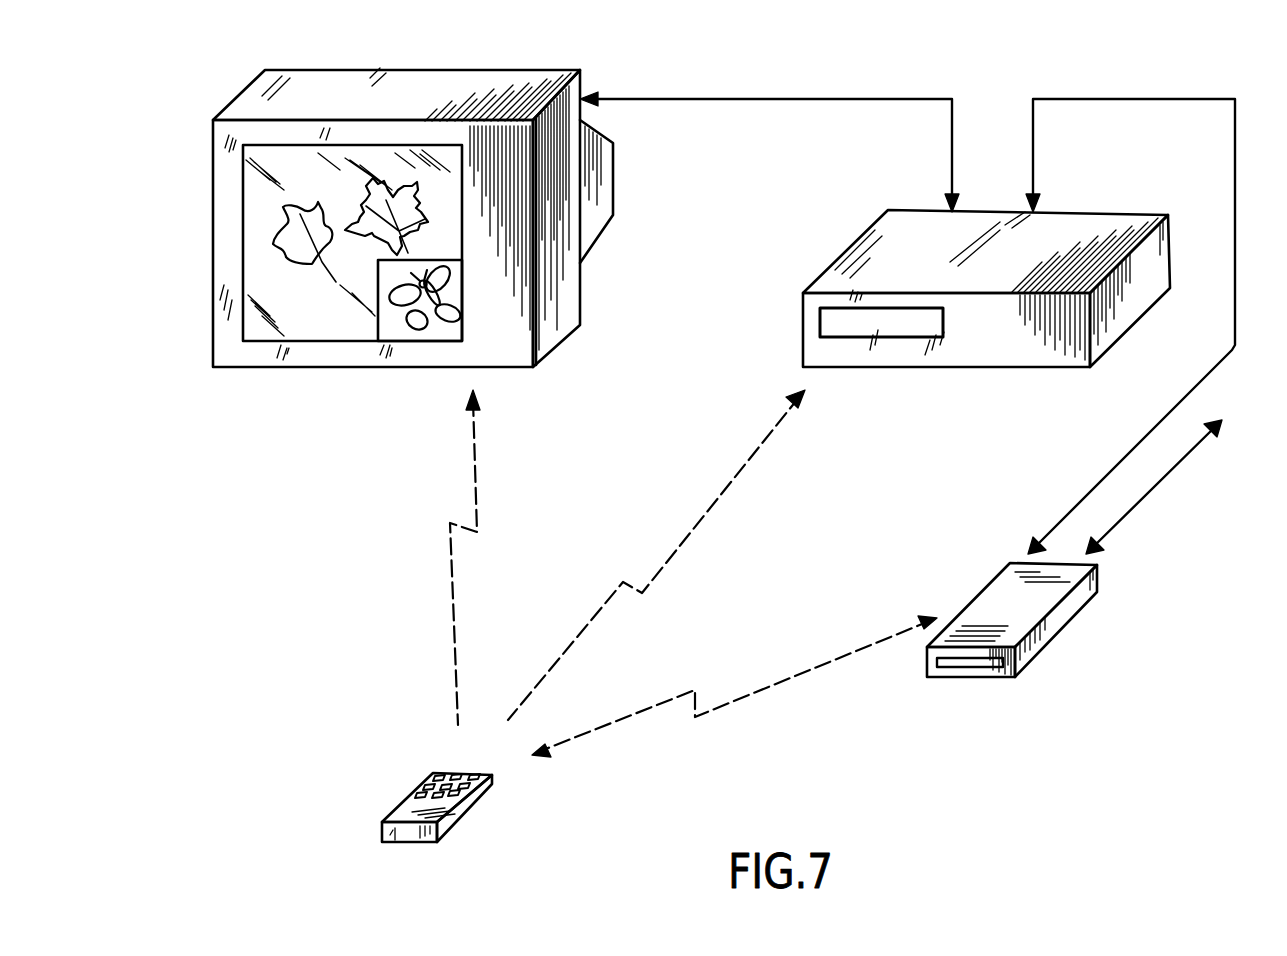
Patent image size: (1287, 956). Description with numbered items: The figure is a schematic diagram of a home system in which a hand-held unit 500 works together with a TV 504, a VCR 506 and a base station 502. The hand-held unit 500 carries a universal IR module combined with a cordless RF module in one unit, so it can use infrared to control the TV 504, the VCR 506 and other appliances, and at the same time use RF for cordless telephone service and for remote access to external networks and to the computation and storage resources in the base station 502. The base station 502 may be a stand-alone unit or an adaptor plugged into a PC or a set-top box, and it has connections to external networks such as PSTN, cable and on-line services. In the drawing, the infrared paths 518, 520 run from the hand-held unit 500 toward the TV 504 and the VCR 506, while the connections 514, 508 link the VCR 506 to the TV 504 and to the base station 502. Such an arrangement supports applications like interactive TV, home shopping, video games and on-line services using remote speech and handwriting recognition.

The hand-held unit 500 is at (473, 800).
The base station 502 is at (1080, 603).
The TV 504 is at (535, 73).
The VCR 506 is at (1085, 227).
The connection to remote access device 508 is at (1202, 98).
The video connection to television 514 is at (855, 97).
The infrared signal to television 518 is at (452, 610).
The infrared signal to set top box 520 is at (645, 578).